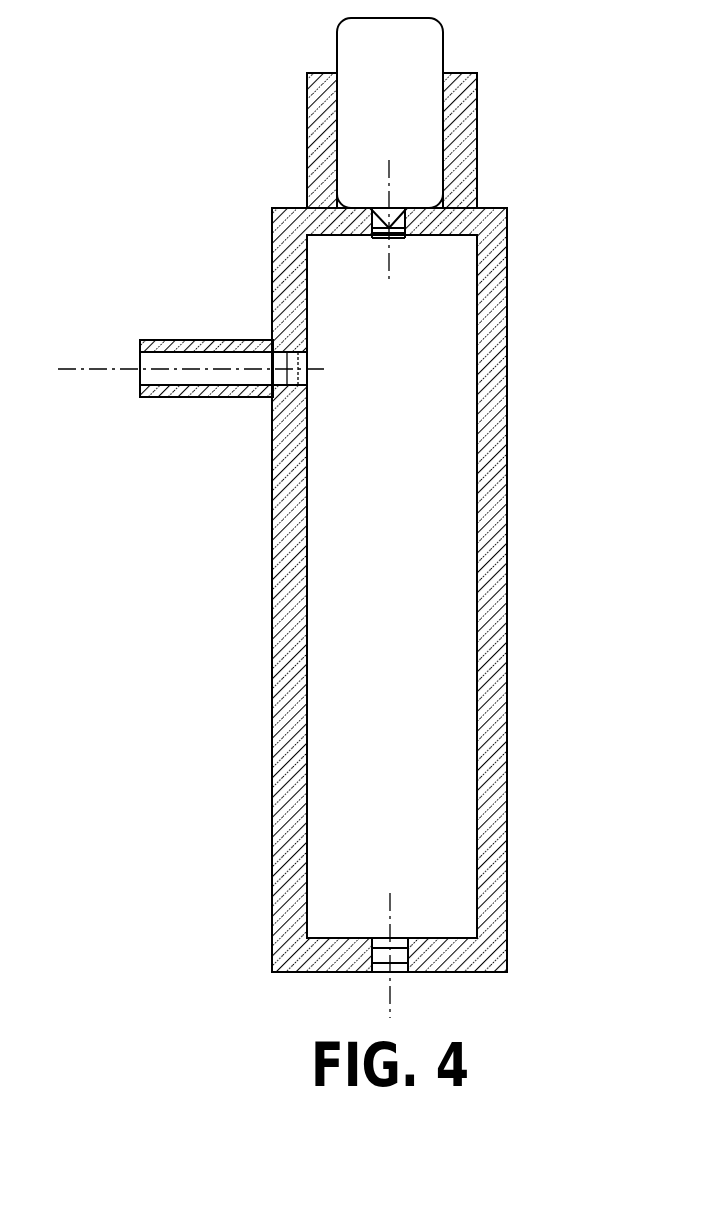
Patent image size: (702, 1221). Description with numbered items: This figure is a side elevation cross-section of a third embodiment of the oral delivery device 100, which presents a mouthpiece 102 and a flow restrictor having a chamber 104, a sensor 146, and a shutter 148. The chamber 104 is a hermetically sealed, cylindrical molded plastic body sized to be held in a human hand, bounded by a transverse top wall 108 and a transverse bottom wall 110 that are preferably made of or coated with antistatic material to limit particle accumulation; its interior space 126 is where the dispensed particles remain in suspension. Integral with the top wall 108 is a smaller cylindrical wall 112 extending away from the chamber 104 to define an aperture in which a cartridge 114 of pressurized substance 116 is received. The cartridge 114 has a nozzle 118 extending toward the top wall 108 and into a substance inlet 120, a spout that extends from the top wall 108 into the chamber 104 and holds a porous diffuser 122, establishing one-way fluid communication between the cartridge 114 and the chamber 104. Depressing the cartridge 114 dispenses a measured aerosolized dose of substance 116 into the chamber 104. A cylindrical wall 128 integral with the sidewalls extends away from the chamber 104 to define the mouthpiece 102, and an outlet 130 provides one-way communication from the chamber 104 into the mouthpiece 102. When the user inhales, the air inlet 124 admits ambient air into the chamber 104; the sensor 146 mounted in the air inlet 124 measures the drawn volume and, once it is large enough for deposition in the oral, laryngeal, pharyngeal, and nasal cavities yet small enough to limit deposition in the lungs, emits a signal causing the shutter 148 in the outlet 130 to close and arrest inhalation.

The oral delivery device 100 is at (140, 216).
The mouthpiece 102 is at (191, 340).
The chamber 104 is at (507, 520).
The transverse top wall 108 is at (492, 215).
The transverse bottom wall 110 is at (458, 965).
The cylindrical wall 112 is at (307, 141).
The cartridge 114 is at (443, 32).
The pressurized substance 116 is at (406, 124).
The nozzle 118 is at (389, 212).
The substance inlet 120 is at (373, 238).
The diffuser 122 is at (405, 235).
The air inlet 124 is at (378, 973).
The cavity 126 is at (399, 491).
The cylindrical wall 128 is at (205, 398).
The outlet 130 is at (307, 357).
The sensor 146 is at (395, 940).
The shutter 148 is at (298, 373).